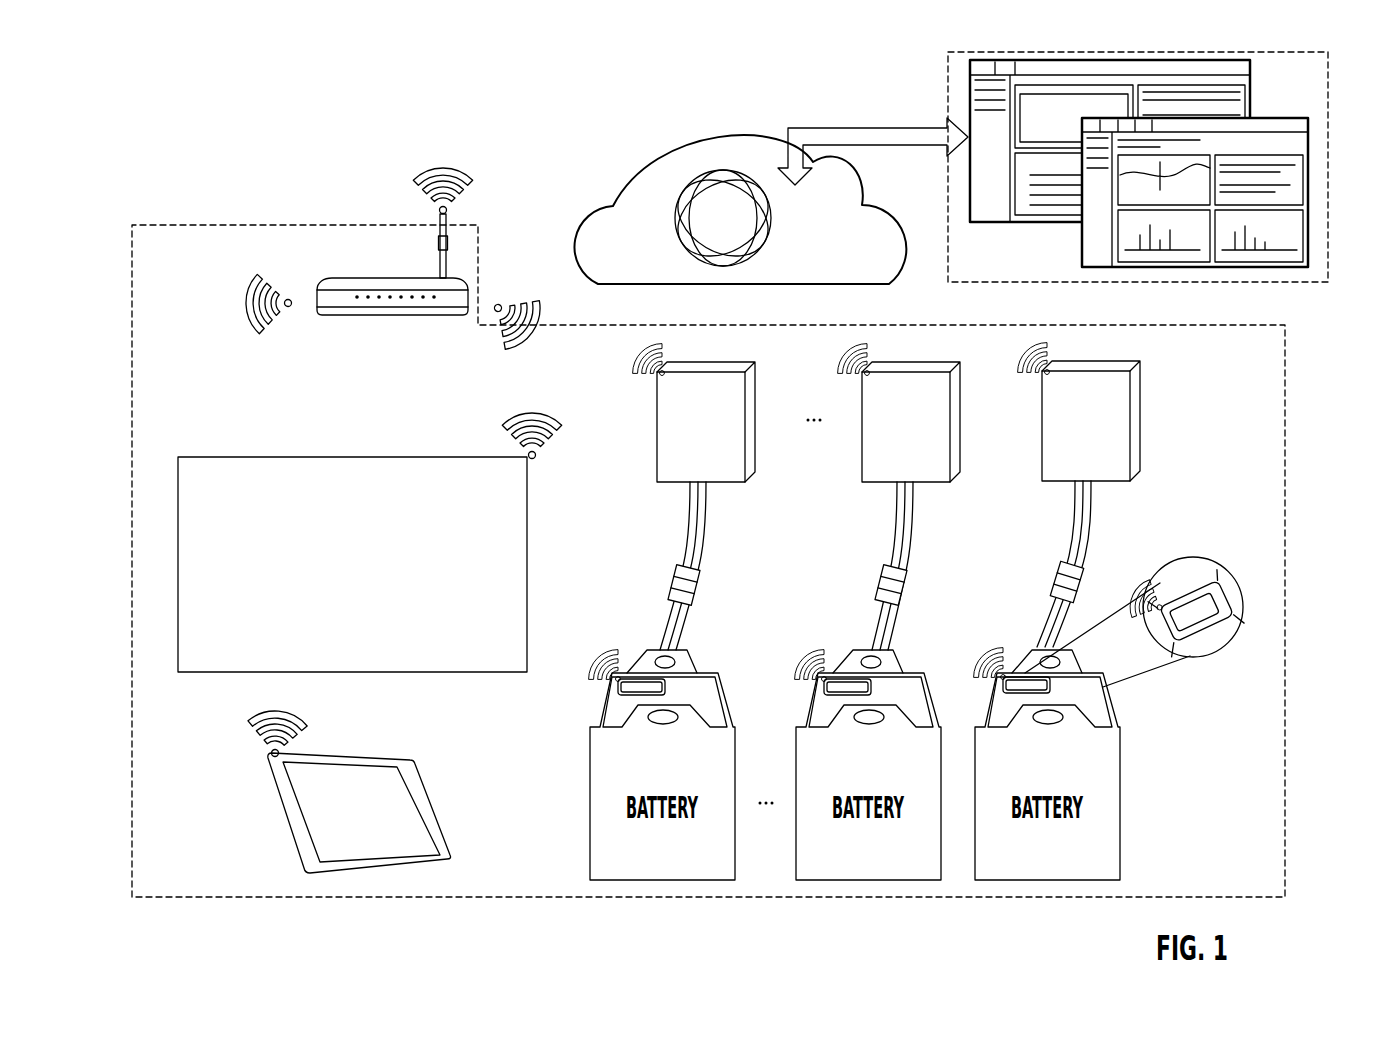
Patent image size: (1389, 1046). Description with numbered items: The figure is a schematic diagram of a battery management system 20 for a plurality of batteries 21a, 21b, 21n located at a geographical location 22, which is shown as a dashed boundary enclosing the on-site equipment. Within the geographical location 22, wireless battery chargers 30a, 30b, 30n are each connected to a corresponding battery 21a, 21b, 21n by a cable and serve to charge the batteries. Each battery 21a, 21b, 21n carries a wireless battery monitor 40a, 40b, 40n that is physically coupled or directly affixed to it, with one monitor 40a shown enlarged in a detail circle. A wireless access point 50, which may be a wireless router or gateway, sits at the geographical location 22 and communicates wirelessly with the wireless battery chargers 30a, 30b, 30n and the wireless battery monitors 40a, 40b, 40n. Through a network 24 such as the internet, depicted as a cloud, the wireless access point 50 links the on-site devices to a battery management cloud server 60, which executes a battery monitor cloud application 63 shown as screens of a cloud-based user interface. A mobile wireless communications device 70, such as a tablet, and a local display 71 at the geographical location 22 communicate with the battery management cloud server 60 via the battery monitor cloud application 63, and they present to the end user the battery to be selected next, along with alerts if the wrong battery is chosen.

The battery management system 20 is at (292, 119).
The geographical location 22 is at (170, 222).
The network 24 is at (605, 193).
The wireless access point 50 is at (405, 283).
The battery management cloud server 60 is at (1161, 186).
The battery monitor cloud application 63 is at (1095, 238).
The wireless battery charger 30a is at (1135, 425).
The wireless battery charger 30b is at (938, 473).
The wireless battery charger 30n is at (733, 473).
The battery 21a is at (1105, 813).
The battery 21b is at (925, 865).
The battery 21n is at (722, 863).
The wireless battery monitor 40a is at (1216, 628).
The wireless battery monitor 40b is at (824, 688).
The wireless battery monitor 40n is at (617, 680).
The mobile wireless communications device 70 is at (312, 828).
The local display 71 is at (203, 630).